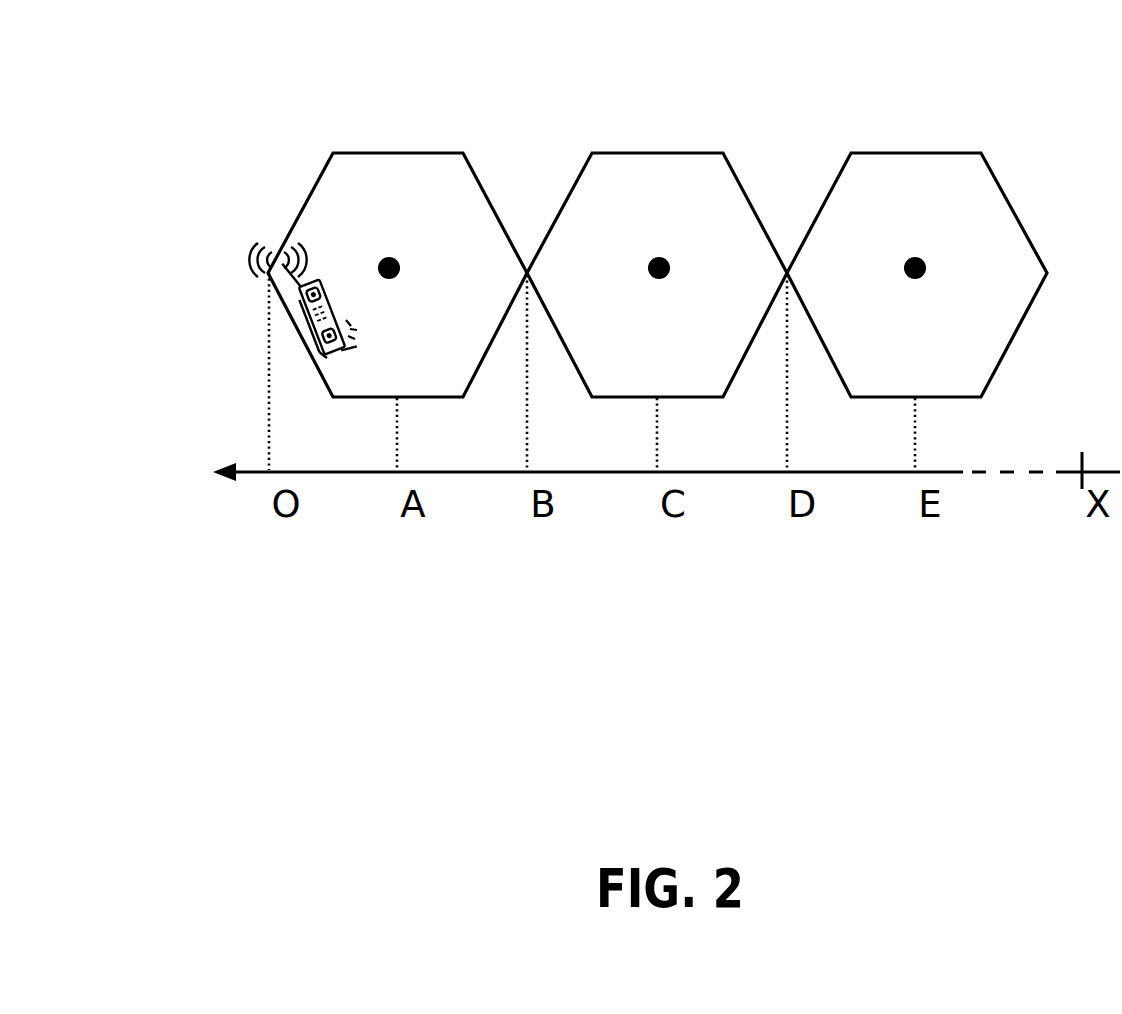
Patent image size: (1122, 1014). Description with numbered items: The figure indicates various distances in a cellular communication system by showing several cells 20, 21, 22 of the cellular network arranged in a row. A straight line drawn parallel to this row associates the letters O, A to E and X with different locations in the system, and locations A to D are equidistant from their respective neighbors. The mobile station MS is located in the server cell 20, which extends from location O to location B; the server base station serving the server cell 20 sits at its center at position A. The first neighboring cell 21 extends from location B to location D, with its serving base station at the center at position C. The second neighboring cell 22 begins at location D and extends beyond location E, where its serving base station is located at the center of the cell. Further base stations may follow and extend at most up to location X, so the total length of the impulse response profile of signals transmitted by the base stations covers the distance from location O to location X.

The server cell 20 is at (386, 178).
The first neighboring cell 21 is at (653, 170).
The second neighboring cell 22 is at (927, 170).
The mobile station MS is at (313, 317).